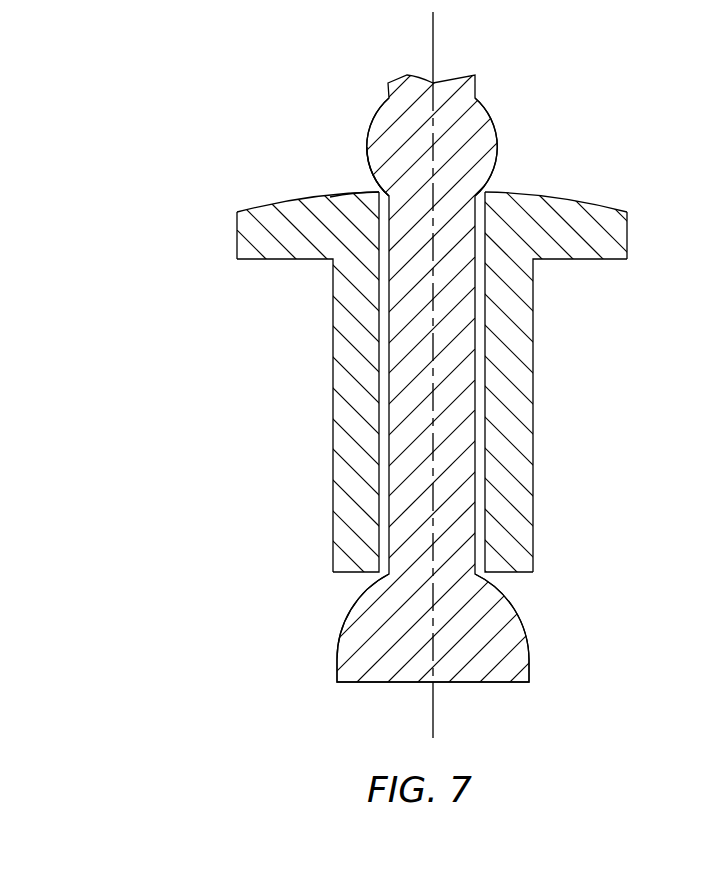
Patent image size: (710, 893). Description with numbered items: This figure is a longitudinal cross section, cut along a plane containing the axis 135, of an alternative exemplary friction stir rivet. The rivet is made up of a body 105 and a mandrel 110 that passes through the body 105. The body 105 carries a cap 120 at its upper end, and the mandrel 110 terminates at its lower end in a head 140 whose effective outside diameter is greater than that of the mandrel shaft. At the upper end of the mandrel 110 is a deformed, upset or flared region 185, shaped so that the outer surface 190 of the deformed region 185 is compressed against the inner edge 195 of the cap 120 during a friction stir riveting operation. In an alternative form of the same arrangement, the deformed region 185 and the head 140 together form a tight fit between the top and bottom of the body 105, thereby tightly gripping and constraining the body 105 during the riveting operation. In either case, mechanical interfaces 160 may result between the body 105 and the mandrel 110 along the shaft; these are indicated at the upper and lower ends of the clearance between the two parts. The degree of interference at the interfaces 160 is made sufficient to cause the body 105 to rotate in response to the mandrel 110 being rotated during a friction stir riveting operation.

The body 105 is at (538, 395).
The mandrel 110 is at (478, 90).
The cap 120 is at (237, 245).
The axis 135 is at (433, 37).
The head 140 is at (530, 640).
The mechanical interface 160 is at (500, 190).
The deformed region 185 is at (365, 130).
The outer surface 190 is at (367, 153).
The inner edge 195 is at (377, 191).